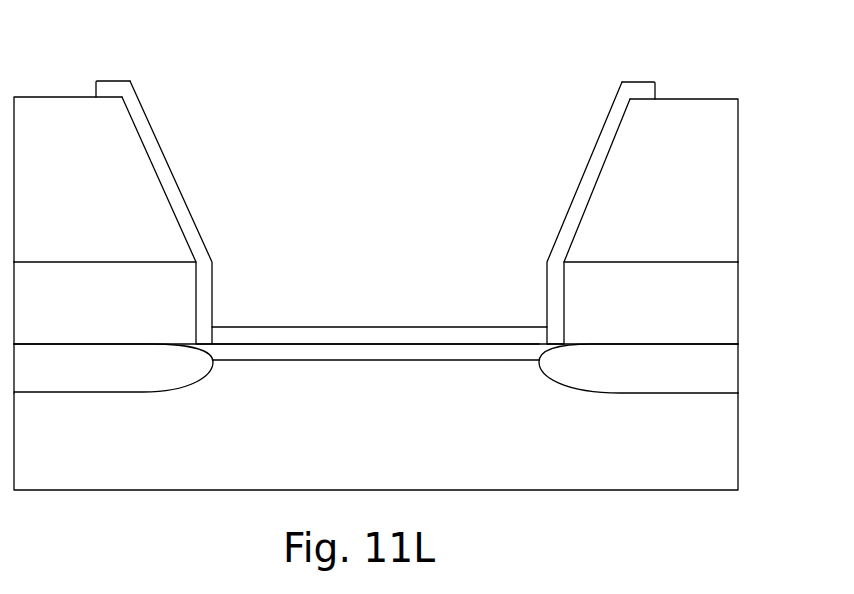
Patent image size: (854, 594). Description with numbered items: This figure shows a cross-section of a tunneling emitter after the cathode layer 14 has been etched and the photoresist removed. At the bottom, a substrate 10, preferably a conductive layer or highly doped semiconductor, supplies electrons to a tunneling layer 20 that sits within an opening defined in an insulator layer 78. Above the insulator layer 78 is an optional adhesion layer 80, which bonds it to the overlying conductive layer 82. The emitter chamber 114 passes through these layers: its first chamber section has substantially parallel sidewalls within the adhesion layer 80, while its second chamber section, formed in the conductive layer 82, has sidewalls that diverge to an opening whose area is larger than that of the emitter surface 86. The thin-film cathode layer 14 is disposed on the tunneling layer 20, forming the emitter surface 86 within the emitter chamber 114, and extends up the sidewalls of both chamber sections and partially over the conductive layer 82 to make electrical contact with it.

The substrate 10 is at (739, 447).
The cathode layer 14 is at (655, 82).
The tunneling layer 20 is at (423, 360).
The insulator layer 78 is at (739, 364).
The adhesion layer 80 is at (739, 315).
The conductive layer 82 is at (739, 212).
The emitter surface 86 is at (459, 315).
The emitter chamber 114 is at (360, 247).